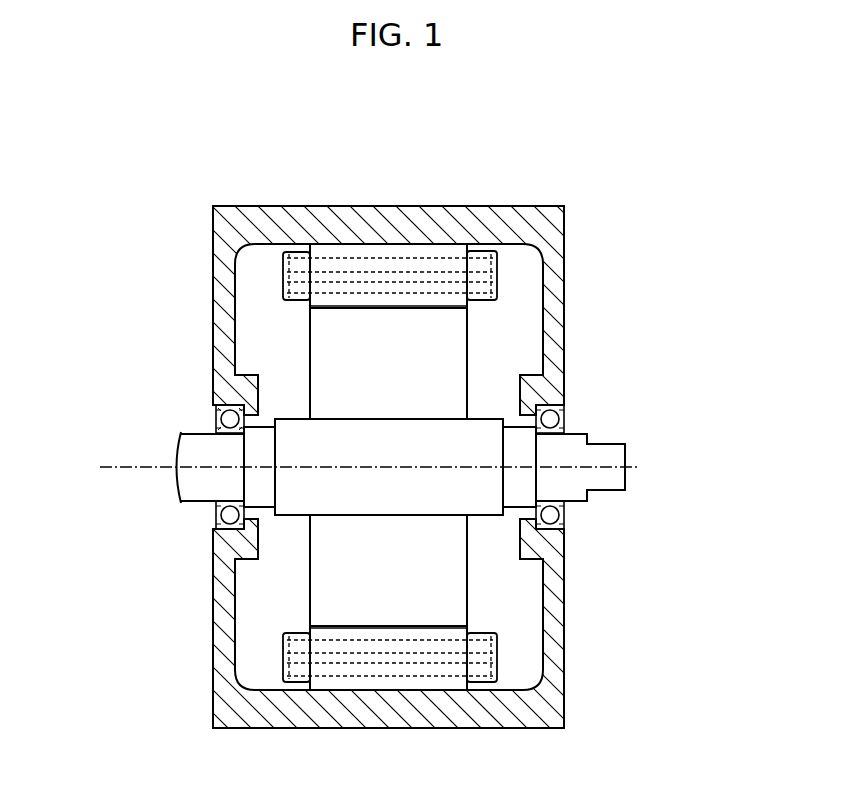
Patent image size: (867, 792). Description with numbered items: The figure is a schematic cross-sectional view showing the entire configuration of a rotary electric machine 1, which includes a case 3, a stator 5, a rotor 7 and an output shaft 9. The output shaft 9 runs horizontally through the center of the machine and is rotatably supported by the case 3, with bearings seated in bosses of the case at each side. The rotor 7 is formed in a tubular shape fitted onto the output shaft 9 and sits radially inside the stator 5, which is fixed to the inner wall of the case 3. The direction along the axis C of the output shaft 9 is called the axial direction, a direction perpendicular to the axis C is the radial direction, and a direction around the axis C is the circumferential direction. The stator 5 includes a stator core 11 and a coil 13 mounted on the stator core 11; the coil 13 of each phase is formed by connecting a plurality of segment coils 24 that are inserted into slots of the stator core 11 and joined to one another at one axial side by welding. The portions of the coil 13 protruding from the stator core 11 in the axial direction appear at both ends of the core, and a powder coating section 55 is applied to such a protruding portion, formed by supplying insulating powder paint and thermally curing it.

The rotary electric machine 1 is at (586, 187).
The case 3 is at (223, 235).
The stator 5 is at (514, 467).
The stator core 11 is at (460, 287).
The rotor 7 is at (452, 597).
The output shaft 9 is at (202, 492).
The powder coating section 55 is at (485, 250).
The coil 13 is at (508, 662).
The segment coil 24 is at (497, 666).
The axis C is at (125, 467).